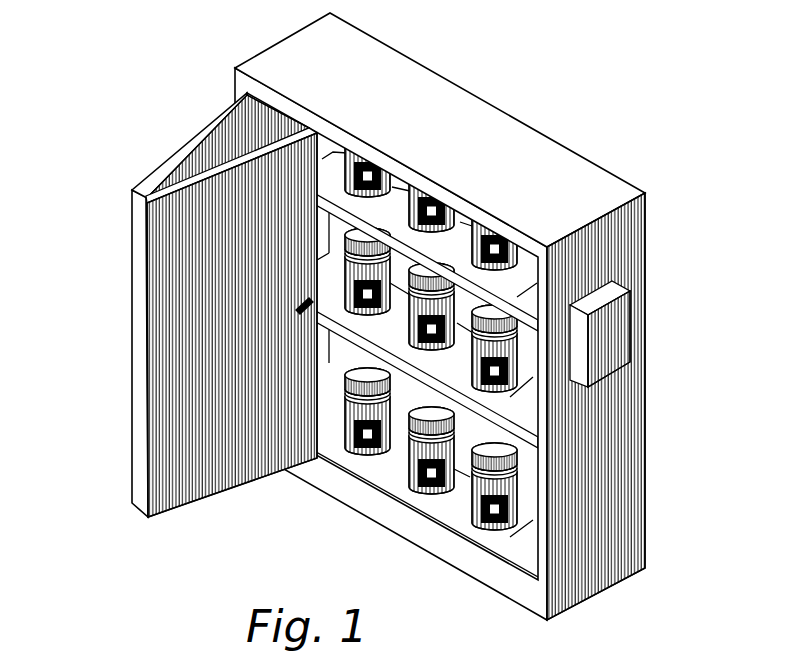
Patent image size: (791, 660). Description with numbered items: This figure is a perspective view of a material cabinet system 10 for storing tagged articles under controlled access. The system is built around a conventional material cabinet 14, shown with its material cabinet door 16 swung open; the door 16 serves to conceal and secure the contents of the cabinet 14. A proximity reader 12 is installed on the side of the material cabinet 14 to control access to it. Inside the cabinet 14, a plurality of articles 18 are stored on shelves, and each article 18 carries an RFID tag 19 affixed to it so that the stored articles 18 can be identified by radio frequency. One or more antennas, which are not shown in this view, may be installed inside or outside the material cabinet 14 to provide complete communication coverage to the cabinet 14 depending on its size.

The material cabinet system 10 is at (364, 315).
The proximity reader 12 is at (612, 318).
The material cabinet 14 is at (497, 110).
The material cabinet door 16 is at (165, 290).
The article 18 is at (472, 535).
The RFID tag 19 is at (488, 527).